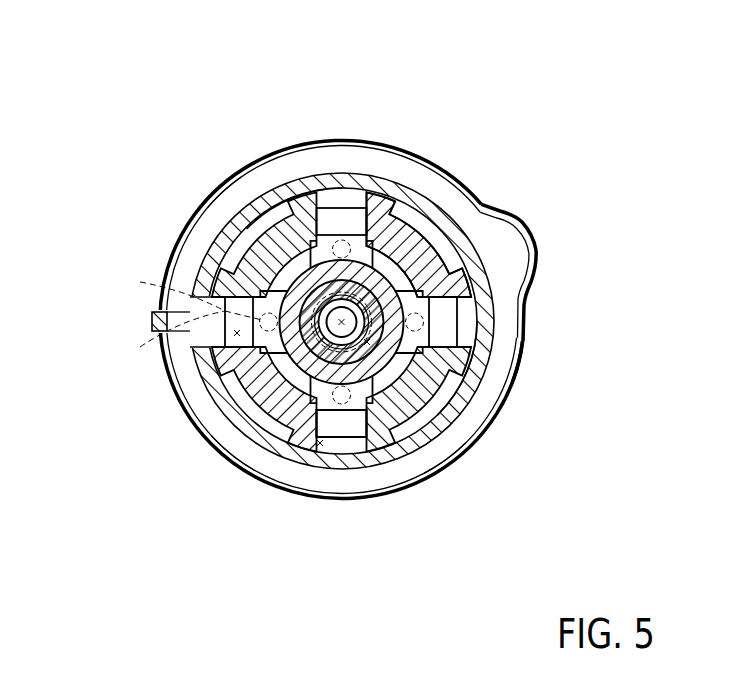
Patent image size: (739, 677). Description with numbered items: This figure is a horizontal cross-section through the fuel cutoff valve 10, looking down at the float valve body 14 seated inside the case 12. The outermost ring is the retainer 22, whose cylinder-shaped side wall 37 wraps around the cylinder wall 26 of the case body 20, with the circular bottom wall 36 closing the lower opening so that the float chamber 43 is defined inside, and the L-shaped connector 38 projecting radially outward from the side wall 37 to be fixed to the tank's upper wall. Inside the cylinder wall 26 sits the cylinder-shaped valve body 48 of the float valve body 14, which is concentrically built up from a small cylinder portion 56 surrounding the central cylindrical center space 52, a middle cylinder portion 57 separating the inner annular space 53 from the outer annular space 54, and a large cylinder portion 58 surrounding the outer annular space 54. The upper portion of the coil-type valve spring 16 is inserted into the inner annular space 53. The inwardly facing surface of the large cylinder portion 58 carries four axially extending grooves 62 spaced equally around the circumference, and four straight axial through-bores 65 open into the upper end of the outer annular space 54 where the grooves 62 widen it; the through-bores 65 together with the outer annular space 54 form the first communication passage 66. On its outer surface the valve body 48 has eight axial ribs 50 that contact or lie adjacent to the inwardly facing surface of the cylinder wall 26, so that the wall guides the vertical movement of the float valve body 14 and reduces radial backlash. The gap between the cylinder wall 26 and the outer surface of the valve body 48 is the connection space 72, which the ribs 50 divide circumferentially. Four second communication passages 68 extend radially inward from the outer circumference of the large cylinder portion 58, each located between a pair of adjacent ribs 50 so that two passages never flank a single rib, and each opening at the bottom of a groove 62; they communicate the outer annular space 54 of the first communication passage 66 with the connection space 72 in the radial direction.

The fuel cutoff valve 10 is at (432, 108).
The case 12 is at (377, 115).
The float valve body 14 is at (436, 238).
The valve spring 16 is at (212, 440).
The case body 20 is at (290, 165).
The retainer 22 is at (522, 210).
The cylinder wall 26 is at (207, 208).
The bottom wall 36 is at (453, 441).
The side wall 37 is at (527, 347).
The connector 38 is at (538, 244).
The float chamber 43 is at (320, 443).
The valve body 48 is at (419, 244).
The ribs 50 is at (224, 366).
The center space 52 is at (352, 345).
The inner annular space 53 is at (441, 405).
The outer annular space 54 is at (292, 448).
The small cylinder portion 56 is at (245, 235).
The middle cylinder portion 57 is at (341, 310).
The large cylinder portion 58 is at (432, 368).
The grooves 62 is at (259, 318).
The through-bores 65 is at (233, 330).
The first communication passage 66 is at (342, 423).
The second communication passages 68 is at (190, 328).
The connection space 72 is at (320, 445).